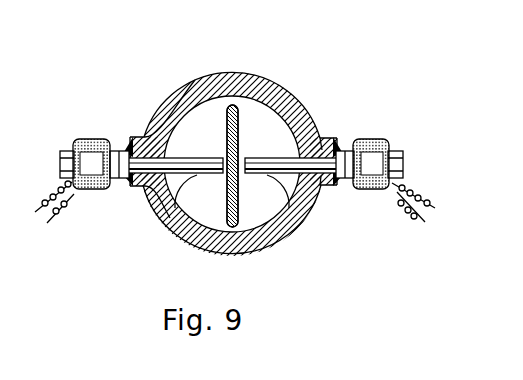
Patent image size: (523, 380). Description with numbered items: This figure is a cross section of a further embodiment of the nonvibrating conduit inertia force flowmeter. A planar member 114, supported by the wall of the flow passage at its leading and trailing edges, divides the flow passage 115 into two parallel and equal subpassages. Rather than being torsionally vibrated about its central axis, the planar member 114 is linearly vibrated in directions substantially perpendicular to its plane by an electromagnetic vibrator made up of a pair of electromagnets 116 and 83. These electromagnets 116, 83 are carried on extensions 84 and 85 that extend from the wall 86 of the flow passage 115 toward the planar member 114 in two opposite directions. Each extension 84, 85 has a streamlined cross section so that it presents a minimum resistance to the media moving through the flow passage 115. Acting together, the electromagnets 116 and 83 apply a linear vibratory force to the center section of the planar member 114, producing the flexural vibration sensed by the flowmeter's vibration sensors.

The electromagnet 83 is at (367, 139).
The extension 84 is at (158, 208).
The extension 85 is at (307, 207).
The wall 86 is at (232, 256).
The planar member 114 is at (226, 123).
The flow passage 115 is at (262, 128).
The electromagnet 116 is at (96, 139).